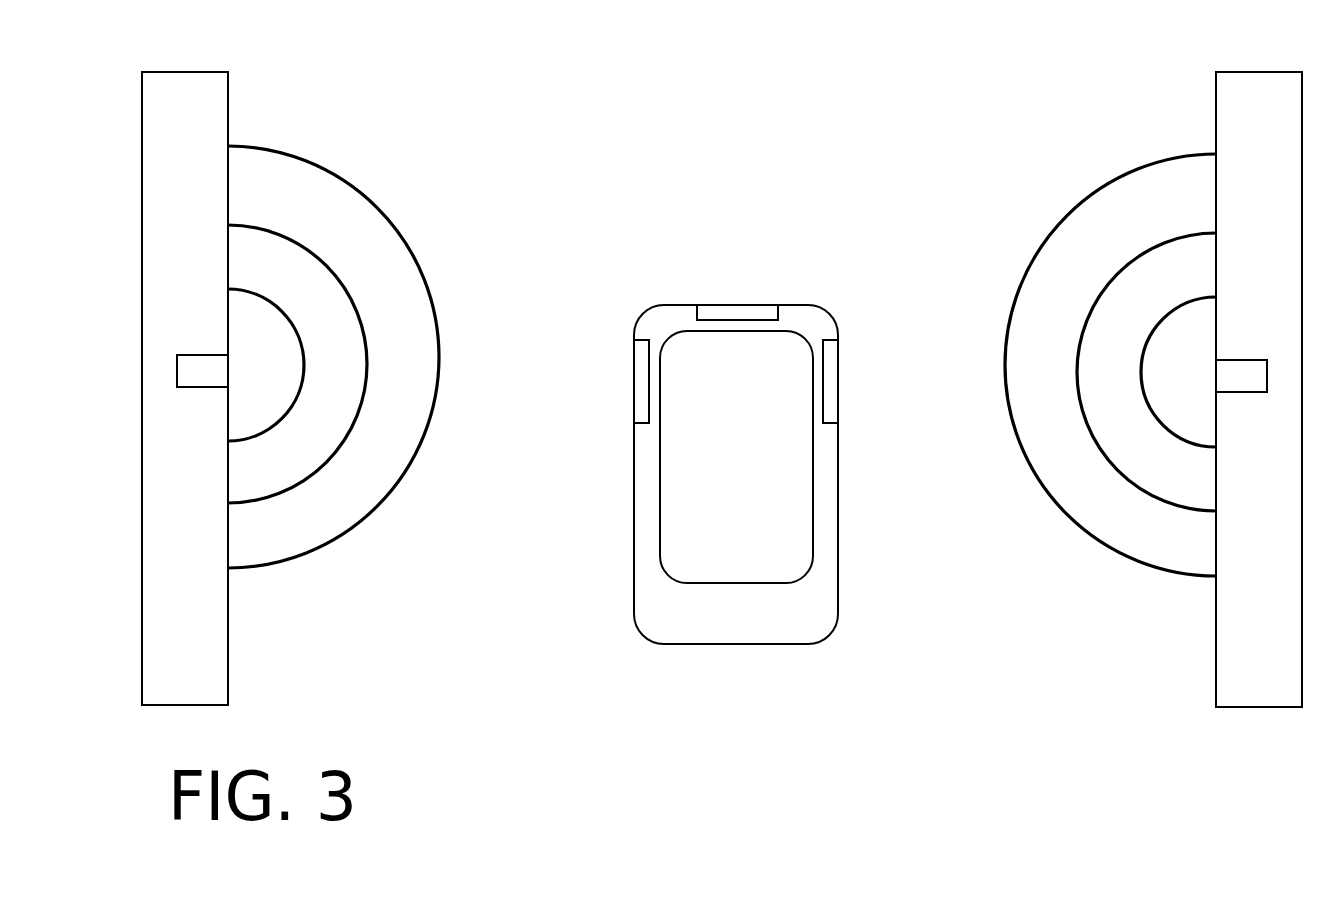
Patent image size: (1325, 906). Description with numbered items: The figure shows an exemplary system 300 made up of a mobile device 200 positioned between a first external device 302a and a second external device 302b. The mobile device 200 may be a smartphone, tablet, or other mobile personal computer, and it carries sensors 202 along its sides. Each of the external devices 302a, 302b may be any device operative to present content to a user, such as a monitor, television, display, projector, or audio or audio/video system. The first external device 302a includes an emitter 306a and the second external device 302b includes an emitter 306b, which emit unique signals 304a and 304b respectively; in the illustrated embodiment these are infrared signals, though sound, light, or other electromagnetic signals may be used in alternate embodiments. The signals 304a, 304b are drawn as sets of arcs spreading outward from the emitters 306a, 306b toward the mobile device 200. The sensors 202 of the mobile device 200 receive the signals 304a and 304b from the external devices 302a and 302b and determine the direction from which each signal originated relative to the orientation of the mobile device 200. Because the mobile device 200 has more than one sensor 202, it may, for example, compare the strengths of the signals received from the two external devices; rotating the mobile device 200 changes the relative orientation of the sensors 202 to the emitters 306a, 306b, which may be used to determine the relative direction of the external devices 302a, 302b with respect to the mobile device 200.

The system 300 is at (484, 55).
The first external device 302a is at (208, 72).
The second external device 302b is at (1242, 72).
The unique signal 304a is at (388, 218).
The unique signal 304b is at (1084, 197).
The emitter 306a is at (212, 360).
The emitter 306b is at (1236, 380).
The mobile device 200 is at (660, 307).
The sensors 202 is at (640, 388).